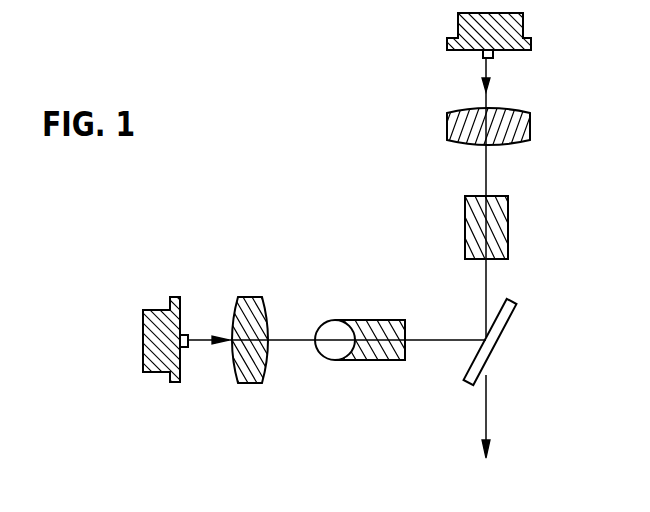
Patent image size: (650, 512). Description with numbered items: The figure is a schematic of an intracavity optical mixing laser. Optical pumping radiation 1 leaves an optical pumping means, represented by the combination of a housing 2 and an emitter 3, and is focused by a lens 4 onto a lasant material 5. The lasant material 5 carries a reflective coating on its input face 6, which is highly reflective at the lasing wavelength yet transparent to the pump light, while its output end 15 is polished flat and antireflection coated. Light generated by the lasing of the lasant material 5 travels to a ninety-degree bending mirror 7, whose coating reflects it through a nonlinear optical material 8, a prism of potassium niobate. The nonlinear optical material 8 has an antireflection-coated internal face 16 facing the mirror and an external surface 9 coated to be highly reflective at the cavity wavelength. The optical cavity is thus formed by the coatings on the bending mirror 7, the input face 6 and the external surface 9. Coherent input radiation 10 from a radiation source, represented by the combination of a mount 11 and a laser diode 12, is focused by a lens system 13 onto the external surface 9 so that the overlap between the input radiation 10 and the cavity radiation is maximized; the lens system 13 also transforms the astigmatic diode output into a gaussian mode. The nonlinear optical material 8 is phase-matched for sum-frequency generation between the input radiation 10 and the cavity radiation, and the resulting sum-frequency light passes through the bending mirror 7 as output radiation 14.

The optical pumping radiation 1 is at (198, 338).
The optical pumping means 2 is at (155, 360).
The optical pumping means 3 is at (185, 348).
The lens 4 is at (250, 300).
The lasant material 5 is at (345, 320).
The input face 6 is at (322, 360).
The 90-degree bending mirror 7 is at (505, 318).
The nonlinear optical material 8 is at (497, 236).
The external surface 9 is at (468, 196).
The coherent input radiation 10 is at (490, 68).
The radiation source 11 is at (464, 26).
The laser diode 12 is at (485, 58).
The lens system 13 is at (448, 127).
The output radiation 14 is at (487, 400).
The output end 15 is at (405, 360).
The internal face 16 is at (470, 259).